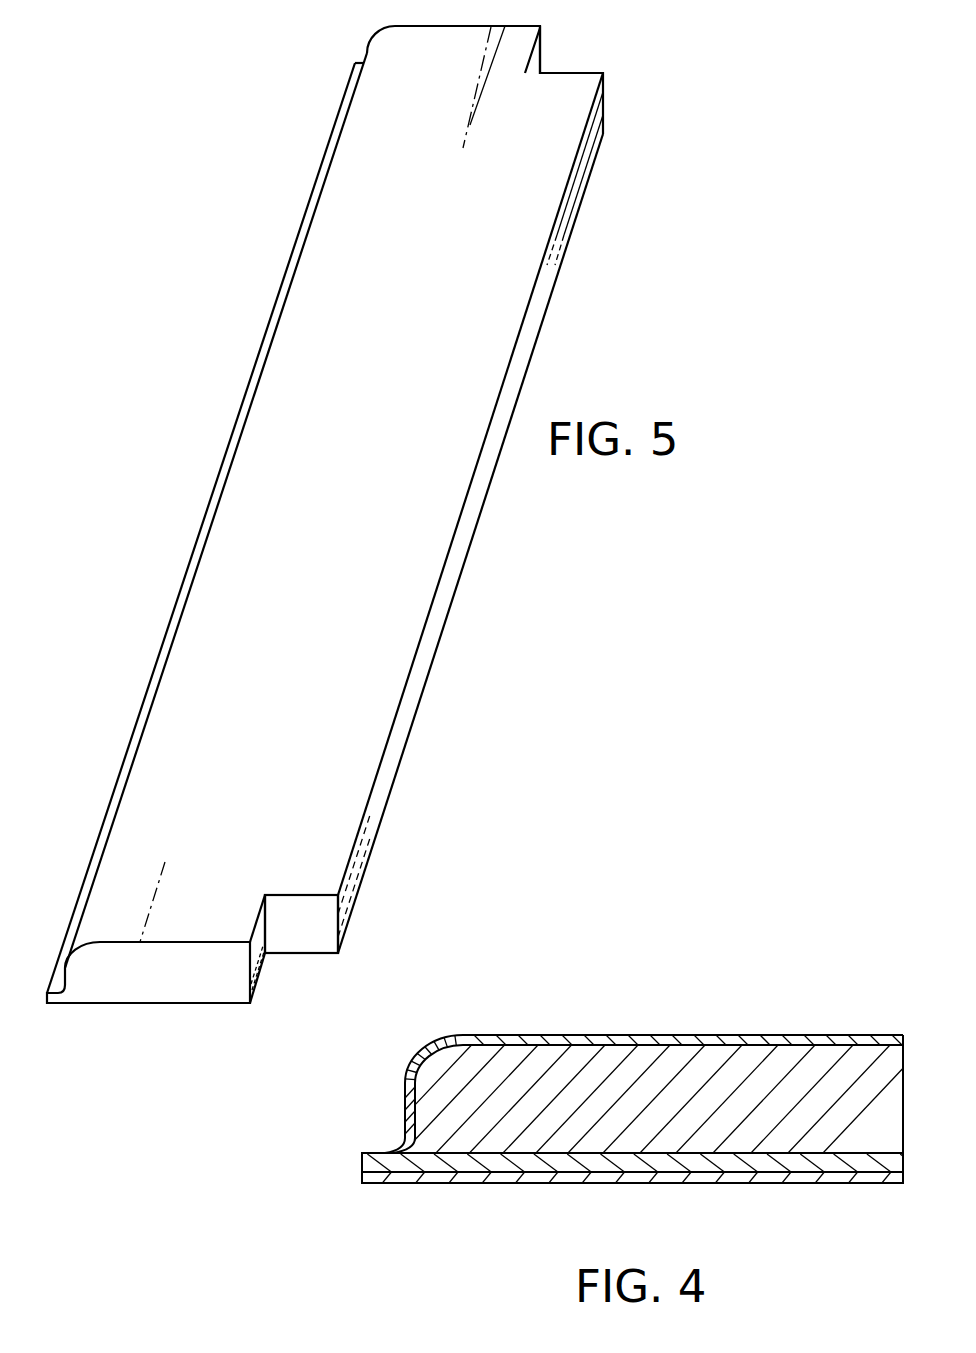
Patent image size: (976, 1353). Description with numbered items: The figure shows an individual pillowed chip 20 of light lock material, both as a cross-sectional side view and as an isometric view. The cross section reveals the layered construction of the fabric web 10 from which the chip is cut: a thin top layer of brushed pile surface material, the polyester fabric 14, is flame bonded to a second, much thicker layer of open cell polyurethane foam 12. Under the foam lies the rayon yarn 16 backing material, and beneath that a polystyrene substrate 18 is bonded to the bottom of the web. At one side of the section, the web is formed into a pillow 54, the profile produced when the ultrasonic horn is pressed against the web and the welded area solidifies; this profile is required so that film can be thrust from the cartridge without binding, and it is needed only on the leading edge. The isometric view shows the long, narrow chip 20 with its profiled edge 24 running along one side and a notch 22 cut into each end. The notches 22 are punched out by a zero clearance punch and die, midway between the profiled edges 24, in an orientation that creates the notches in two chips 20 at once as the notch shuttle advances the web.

In FIG. 4, the fabric web 10 is at (582, 1102).
In FIG. 4, the open cell polyurethane foam 12 is at (772, 1065).
In FIG. 4, the polyester fabric 14 is at (676, 1040).
In FIG. 4, the rayon yarn 16 is at (502, 1162).
In FIG. 4, the polystyrene substrate 18 is at (590, 1175).
In FIG. 5, the chip 20 is at (356, 525).
In FIG. 5, the notch 22 is at (590, 46).
In FIG. 5, the profiled edge 24 is at (170, 648).
In FIG. 4, the pillow 54 is at (395, 1152).